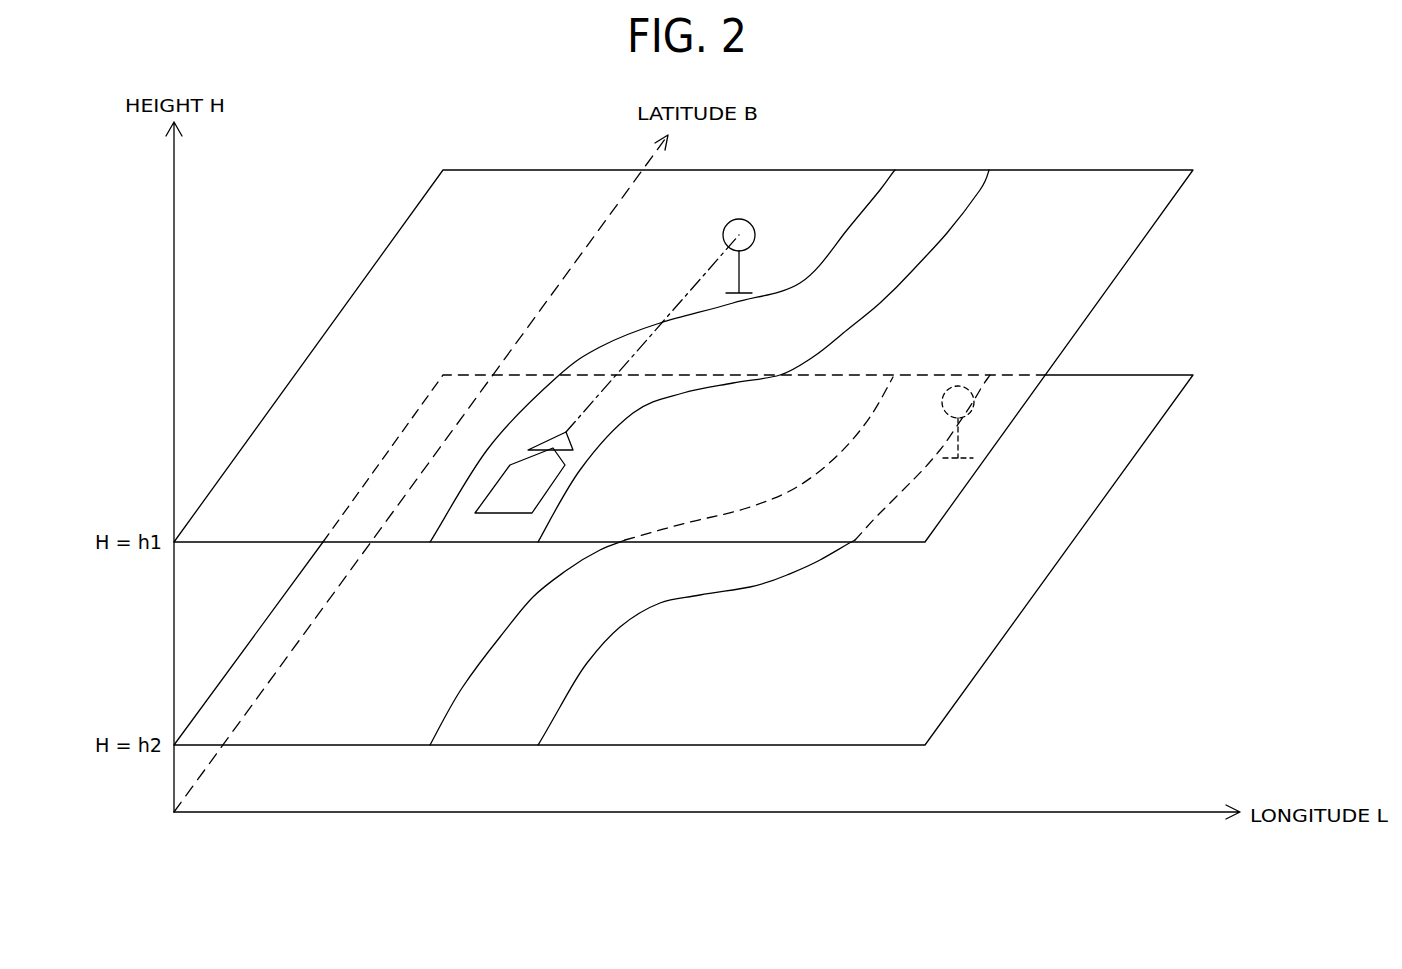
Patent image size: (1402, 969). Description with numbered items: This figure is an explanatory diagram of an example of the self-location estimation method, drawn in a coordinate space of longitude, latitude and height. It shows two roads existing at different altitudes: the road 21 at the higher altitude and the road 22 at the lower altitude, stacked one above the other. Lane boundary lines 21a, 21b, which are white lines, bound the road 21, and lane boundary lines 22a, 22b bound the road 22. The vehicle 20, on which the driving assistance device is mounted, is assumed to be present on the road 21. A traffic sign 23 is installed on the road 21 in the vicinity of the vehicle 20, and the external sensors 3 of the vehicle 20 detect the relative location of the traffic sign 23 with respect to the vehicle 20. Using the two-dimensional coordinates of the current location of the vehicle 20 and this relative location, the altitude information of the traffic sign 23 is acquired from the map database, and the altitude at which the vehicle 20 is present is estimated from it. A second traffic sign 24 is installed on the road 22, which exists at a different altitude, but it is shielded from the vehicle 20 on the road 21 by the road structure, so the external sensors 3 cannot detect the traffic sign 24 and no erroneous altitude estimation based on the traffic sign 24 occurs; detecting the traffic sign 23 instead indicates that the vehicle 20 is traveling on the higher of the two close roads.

The external sensors 3 is at (570, 443).
The vehicle 20 is at (517, 488).
The road 21 is at (751, 321).
The lane boundary line 21a is at (864, 212).
The lane boundary line 21b is at (963, 213).
The road 22 is at (674, 593).
The lane boundary line 22a is at (462, 688).
The lane boundary line 22b is at (560, 707).
The traffic sign 23 is at (741, 219).
The traffic sign 24 is at (966, 383).